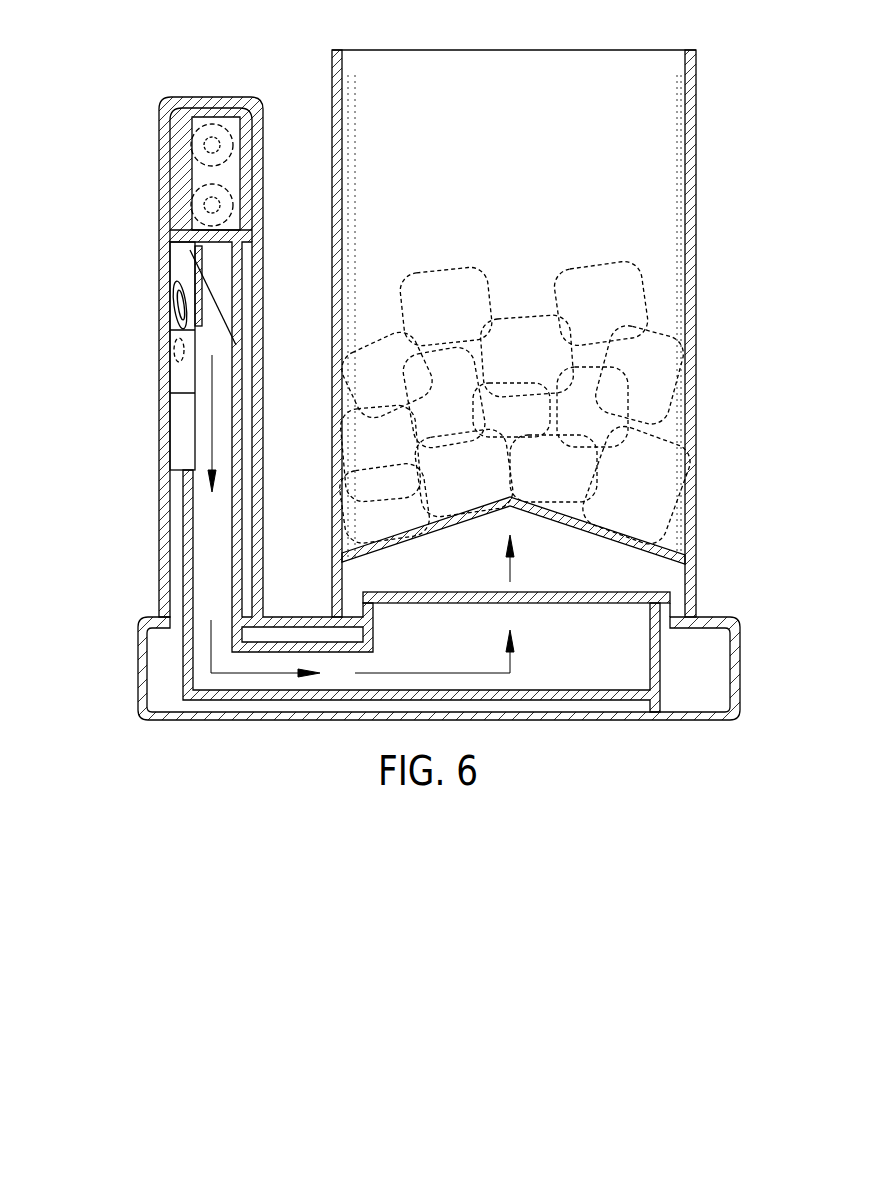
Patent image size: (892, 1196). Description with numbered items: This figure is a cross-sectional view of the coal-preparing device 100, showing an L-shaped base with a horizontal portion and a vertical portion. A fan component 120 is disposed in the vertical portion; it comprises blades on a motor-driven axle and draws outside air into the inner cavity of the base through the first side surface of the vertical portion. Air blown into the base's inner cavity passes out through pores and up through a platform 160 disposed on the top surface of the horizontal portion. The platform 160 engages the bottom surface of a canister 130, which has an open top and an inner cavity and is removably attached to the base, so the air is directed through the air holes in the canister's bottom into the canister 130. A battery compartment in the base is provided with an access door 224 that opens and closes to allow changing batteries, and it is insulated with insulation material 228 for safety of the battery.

The air purification device 100 is at (441, 860).
The fan component 120 is at (160, 360).
The canister 130 is at (695, 210).
The platform 160 is at (557, 603).
The access door 224 is at (160, 208).
The insulation material 228 is at (233, 117).